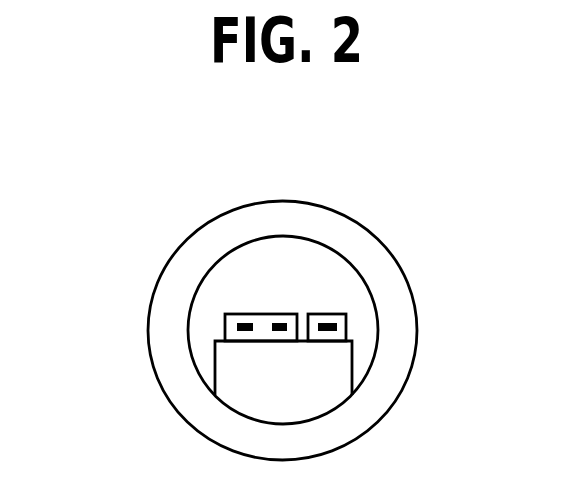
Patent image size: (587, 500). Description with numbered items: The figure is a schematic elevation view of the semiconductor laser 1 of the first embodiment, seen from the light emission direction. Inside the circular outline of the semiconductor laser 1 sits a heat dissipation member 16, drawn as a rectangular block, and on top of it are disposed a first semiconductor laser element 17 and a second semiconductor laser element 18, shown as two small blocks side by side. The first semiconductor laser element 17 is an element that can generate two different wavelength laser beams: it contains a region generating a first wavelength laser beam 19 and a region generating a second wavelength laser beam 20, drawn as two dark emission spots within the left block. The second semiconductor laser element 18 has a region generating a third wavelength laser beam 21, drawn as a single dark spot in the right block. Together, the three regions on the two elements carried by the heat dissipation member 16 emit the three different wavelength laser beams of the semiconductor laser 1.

The semiconductor laser 1 is at (183, 417).
The heat dissipation member 16 is at (312, 400).
The first semiconductor laser element 17 is at (243, 322).
The second semiconductor laser element 18 is at (328, 320).
The region generating a first wavelength laser beam 19 is at (235, 325).
The region generating a second wavelength laser beam 20 is at (282, 323).
The region generating a third wavelength laser beam 21 is at (338, 325).